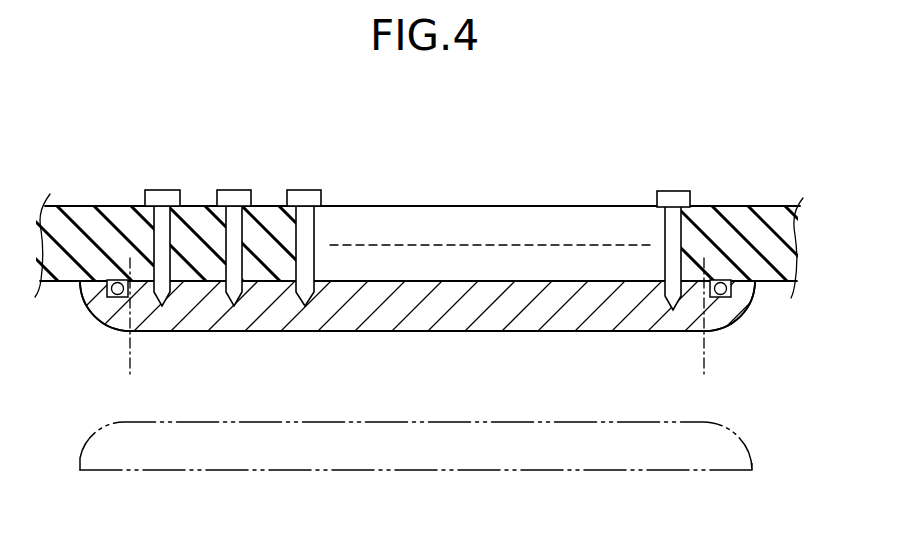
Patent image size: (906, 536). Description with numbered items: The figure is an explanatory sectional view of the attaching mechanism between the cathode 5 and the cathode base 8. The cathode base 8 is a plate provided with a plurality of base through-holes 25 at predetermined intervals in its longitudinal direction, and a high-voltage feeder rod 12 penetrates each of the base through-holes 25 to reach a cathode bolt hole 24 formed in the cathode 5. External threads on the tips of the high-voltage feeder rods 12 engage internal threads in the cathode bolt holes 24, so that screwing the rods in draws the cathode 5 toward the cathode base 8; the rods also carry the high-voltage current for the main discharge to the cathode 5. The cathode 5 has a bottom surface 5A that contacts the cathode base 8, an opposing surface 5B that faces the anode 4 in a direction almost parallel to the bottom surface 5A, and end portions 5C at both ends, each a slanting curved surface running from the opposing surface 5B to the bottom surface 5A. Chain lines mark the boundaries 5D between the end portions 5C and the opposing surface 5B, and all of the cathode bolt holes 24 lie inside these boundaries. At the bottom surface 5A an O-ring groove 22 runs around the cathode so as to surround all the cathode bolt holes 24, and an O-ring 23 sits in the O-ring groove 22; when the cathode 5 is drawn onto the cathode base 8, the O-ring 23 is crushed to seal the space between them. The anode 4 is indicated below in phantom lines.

The anode 4 is at (740, 437).
The cathode 5 is at (562, 320).
The bottom surface 5A is at (529, 280).
The opposing surface 5B is at (453, 332).
The end portions 5C is at (92, 296).
The boundaries 5D is at (128, 352).
The cathode base 8 is at (439, 212).
The high-voltage feeder rod 12 is at (215, 190).
The O-ring groove 22 is at (104, 291).
The O-ring 23 is at (115, 293).
The cathode bolt holes 24 is at (231, 291).
The base through-holes 25 is at (232, 225).